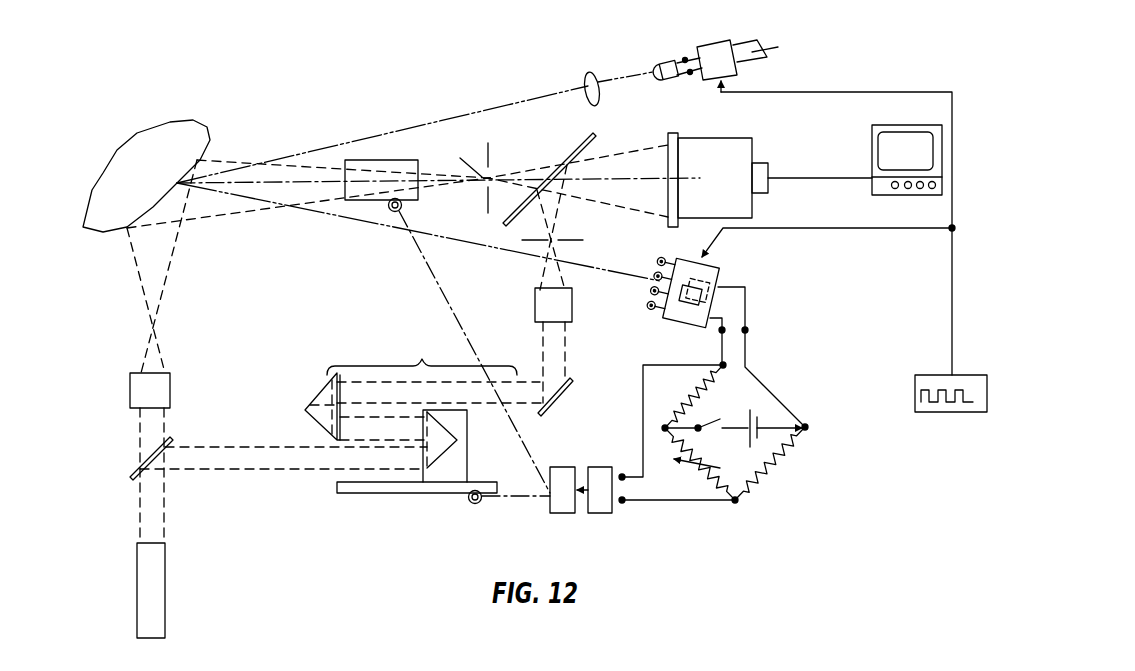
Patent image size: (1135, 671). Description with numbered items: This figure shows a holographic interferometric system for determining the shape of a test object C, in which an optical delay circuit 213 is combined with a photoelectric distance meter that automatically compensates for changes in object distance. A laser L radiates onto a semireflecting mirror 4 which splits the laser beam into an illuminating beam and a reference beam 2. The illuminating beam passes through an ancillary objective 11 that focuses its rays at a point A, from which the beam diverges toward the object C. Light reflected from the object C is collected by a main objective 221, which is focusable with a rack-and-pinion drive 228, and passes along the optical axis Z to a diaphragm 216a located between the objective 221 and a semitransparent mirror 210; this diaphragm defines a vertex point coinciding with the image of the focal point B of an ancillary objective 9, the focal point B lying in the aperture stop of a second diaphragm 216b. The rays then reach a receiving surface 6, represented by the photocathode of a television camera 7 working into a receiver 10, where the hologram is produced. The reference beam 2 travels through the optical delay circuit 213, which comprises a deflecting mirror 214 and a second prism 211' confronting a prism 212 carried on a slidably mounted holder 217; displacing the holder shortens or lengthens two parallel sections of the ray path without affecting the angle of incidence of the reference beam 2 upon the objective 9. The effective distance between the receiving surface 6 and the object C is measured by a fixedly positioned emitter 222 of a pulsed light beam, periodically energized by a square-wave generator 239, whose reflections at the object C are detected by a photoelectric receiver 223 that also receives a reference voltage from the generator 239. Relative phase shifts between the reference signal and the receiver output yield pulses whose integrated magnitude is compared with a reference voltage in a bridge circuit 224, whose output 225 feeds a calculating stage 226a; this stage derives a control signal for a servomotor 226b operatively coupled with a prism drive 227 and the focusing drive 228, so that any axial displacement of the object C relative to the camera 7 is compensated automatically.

The test object C is at (157, 133).
The focal point of ancillary objective 11 A is at (158, 327).
The main objective 221 is at (383, 165).
The rack-and-pinion drive 228 is at (403, 209).
The diaphragm 216a is at (490, 155).
The semitransparent mirror 210 is at (574, 160).
The diaphragm 216b is at (577, 240).
The focal point of ancillary objective 9 B is at (557, 243).
The optical axis Z is at (618, 176).
The receiving surface 6 is at (668, 136).
The television camera 7 is at (727, 146).
The receiver 10 is at (875, 150).
The emitter 222 is at (683, 47).
The square-wave generator 239 is at (946, 414).
The photoelectric receiver 223 is at (722, 269).
The bridge circuit 224 is at (748, 401).
The output line 225 is at (697, 501).
The servomotor 226b is at (558, 470).
The calculating stage 226a is at (611, 457).
The ancillary objective 9 is at (572, 307).
The deflecting mirror 214 is at (558, 401).
The optical delay circuit 213 is at (422, 356).
The second prism 211' is at (296, 406).
The prism 212 is at (443, 425).
The prism holder 217 is at (467, 463).
The prism drive 227 is at (475, 504).
The ancillary objective 11 is at (165, 386).
The semireflecting mirror 4 is at (150, 455).
The reference beam 2 is at (215, 465).
The laser L is at (165, 586).